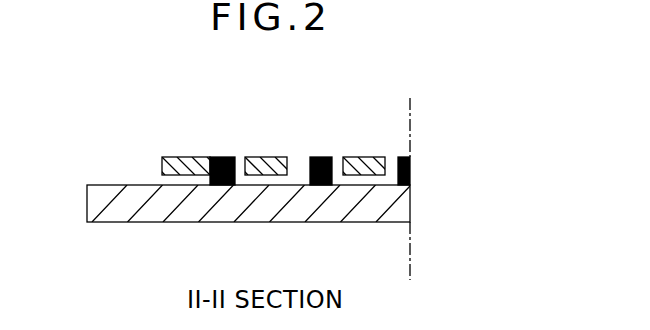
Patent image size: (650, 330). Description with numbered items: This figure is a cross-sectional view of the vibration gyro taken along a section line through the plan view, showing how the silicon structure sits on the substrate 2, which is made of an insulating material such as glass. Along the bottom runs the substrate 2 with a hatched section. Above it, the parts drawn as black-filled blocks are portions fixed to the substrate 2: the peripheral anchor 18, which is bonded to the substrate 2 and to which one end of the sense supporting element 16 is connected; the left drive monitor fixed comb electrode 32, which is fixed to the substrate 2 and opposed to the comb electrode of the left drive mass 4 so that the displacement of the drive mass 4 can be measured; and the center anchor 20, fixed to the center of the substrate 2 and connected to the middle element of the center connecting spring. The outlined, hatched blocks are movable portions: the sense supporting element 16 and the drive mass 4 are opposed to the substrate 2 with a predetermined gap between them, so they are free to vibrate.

The substrate 2 is at (99, 190).
The drive mass 4 is at (277, 157).
The sense supporting element 16 is at (185, 157).
The peripheral anchor 18 is at (219, 157).
The center anchor 20 is at (403, 157).
The left drive monitor fixed comb electrode 32 is at (322, 157).